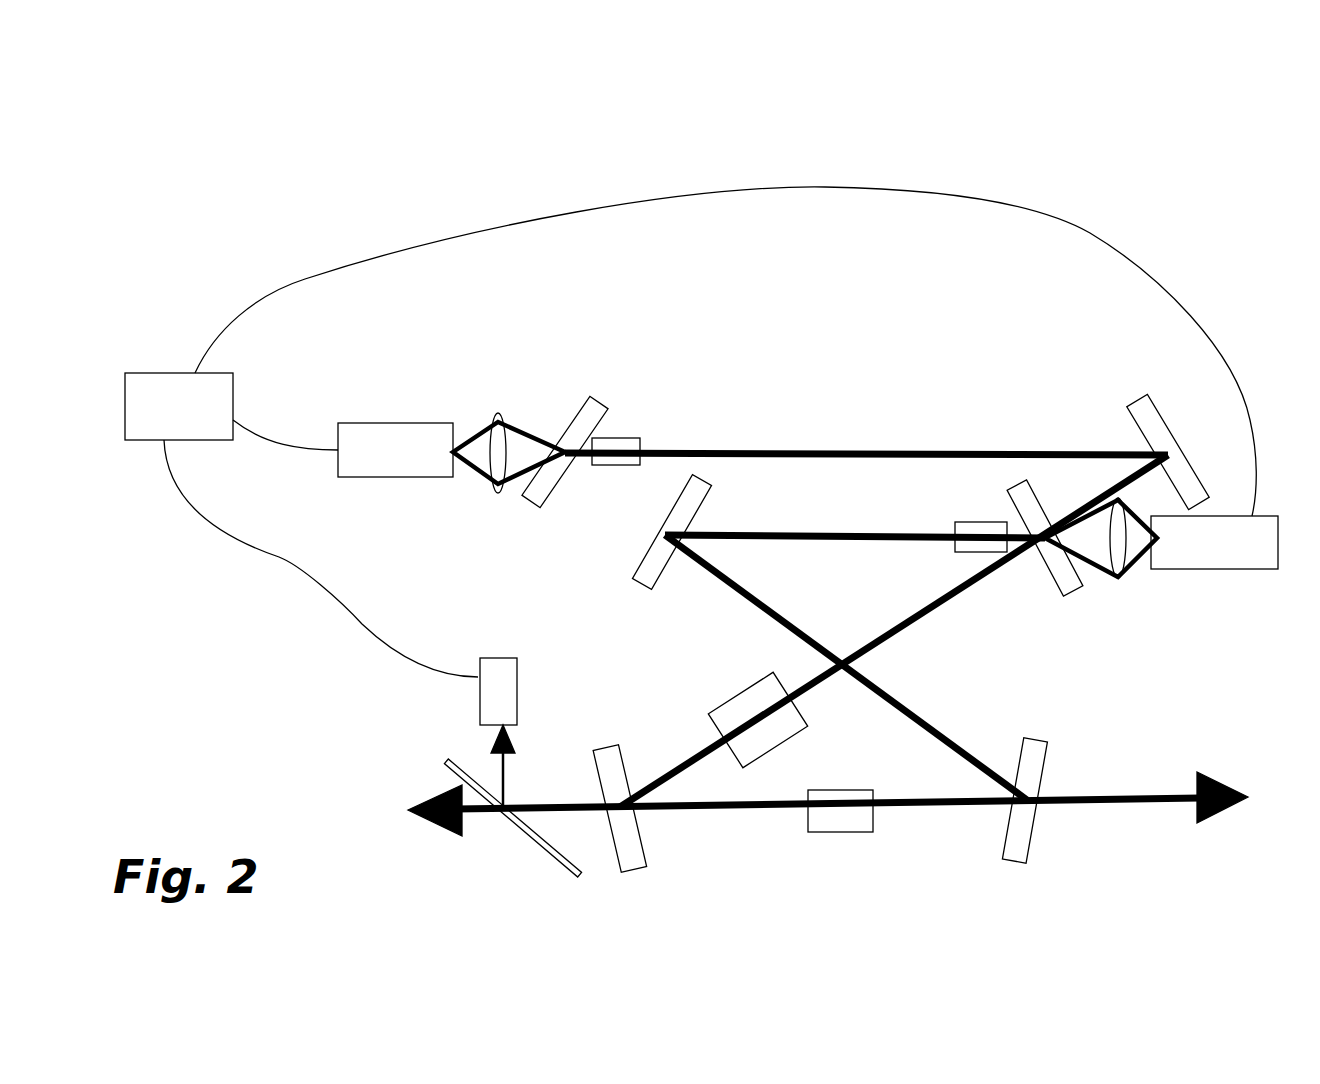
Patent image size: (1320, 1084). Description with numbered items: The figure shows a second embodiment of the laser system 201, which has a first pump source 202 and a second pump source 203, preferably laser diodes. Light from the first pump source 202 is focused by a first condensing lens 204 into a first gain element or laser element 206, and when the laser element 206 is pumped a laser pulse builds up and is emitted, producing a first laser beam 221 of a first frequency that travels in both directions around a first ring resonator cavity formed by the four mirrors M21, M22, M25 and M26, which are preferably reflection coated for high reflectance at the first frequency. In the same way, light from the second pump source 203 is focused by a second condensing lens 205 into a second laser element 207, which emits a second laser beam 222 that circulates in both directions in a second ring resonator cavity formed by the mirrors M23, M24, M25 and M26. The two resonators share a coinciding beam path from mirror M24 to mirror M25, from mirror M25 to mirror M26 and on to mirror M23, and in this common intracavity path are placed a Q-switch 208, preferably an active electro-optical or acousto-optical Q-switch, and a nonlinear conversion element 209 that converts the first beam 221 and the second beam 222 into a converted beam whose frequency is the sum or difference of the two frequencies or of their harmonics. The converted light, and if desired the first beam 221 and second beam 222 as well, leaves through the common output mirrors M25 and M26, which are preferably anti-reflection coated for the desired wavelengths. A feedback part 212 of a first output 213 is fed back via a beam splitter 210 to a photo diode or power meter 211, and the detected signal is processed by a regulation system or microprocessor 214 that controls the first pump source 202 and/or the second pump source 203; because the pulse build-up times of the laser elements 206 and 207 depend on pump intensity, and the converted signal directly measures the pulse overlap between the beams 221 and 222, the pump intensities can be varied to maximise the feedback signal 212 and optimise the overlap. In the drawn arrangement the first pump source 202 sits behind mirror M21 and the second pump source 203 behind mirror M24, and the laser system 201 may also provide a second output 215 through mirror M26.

The laser system 201 is at (1083, 150).
The first pump source 202 is at (368, 437).
The second pump source 203 is at (1278, 565).
The first condensing lens 204 is at (506, 414).
The second condensing lens 205 is at (1119, 580).
The first gain element 206 is at (626, 443).
The second gain element 207 is at (973, 520).
The Q-switch 208 is at (745, 705).
The nonlinear conversion element 209 is at (843, 822).
The beam splitter 210 is at (540, 847).
The photo diode or power meter 211 is at (497, 665).
The feedback part 212 is at (505, 772).
The first output 213 is at (473, 818).
The regulation system or microprocessor 214 is at (163, 385).
The second output 215 is at (1152, 805).
The first laser beam 221 is at (810, 451).
The second laser beam 222 is at (752, 530).
The mirror M21 is at (597, 410).
The mirror M22 is at (1142, 404).
The mirror M23 is at (642, 590).
The mirror M24 is at (1066, 600).
The common output mirror M25 is at (630, 833).
The common output mirror M26 is at (1010, 852).